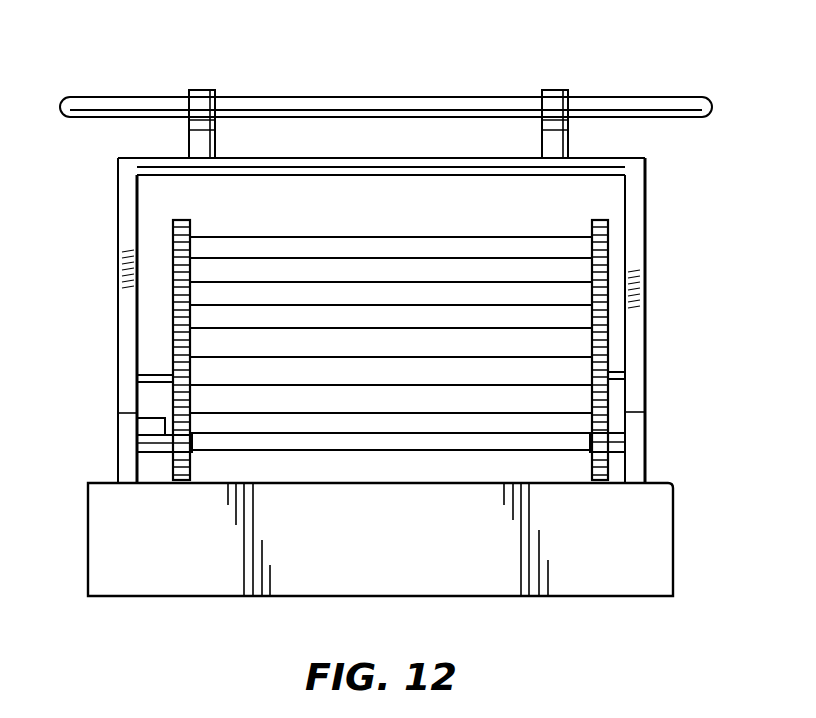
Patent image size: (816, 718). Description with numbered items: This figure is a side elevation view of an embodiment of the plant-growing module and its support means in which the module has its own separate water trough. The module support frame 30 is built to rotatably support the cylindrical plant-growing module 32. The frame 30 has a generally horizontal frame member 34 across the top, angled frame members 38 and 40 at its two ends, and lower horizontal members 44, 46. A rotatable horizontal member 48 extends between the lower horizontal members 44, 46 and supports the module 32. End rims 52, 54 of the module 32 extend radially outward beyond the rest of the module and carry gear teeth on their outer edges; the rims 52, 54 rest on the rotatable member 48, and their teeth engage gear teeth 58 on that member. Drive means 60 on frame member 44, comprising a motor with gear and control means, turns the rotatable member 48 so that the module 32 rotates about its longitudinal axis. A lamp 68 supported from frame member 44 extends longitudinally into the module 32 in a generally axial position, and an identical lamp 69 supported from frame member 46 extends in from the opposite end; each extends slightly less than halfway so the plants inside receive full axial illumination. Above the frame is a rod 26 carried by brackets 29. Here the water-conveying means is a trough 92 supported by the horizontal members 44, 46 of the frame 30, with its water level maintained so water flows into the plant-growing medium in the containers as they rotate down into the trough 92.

The rod 26 is at (400, 104).
The bracket 29 is at (201, 101).
The module support frame 30 is at (117, 144).
The cylindrical plant-growing module 32 is at (577, 250).
The horizontal frame member 34 is at (597, 158).
The angled frame member 38 is at (125, 198).
The angled frame member 40 is at (638, 196).
The lower horizontal member 44 is at (125, 431).
The lower horizontal member 46 is at (635, 436).
The rotatable horizontal member 48 is at (418, 440).
The end rim 52 is at (173, 300).
The end rim 54 is at (600, 318).
The gear teeth 58 is at (165, 446).
The drive means 60 is at (150, 425).
The lamp 68 is at (155, 375).
The lamp 69 is at (615, 368).
The trough 92 is at (655, 528).